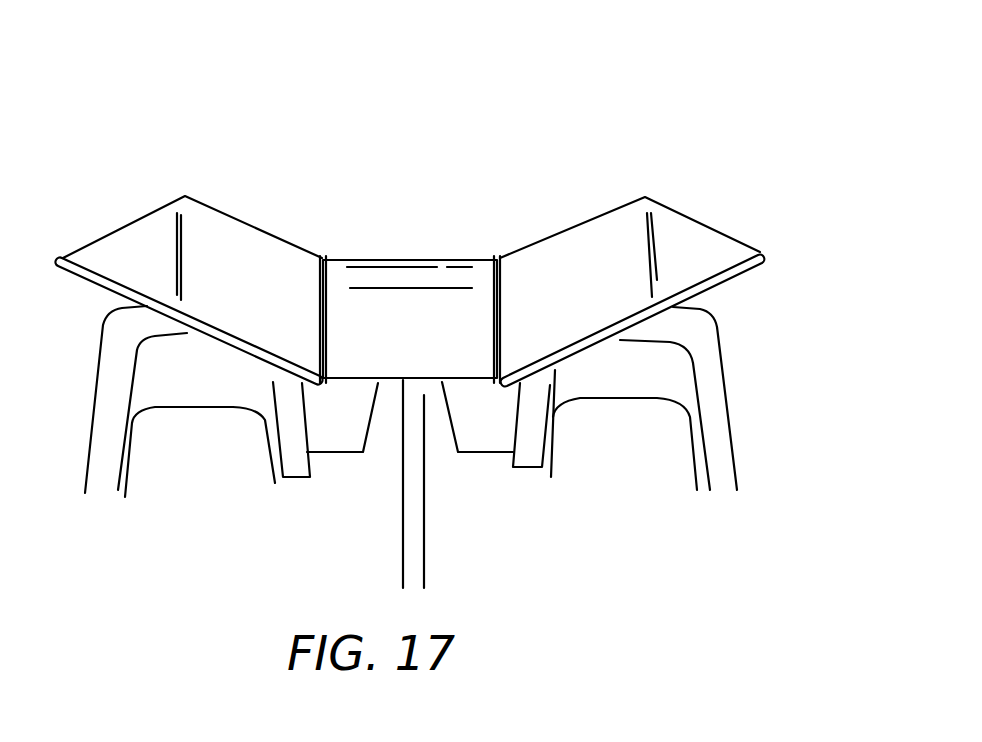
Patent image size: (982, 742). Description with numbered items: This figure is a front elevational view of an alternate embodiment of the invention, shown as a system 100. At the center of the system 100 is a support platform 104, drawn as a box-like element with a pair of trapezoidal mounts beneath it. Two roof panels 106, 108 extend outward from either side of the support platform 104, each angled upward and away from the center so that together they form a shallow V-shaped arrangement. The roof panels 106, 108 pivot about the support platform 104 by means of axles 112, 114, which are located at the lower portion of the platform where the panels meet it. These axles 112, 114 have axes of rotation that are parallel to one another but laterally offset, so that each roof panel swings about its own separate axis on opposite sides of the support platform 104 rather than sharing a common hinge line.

The system 100 is at (632, 151).
The support platform 104 is at (410, 260).
The roof panel 106 is at (160, 222).
The roof panel 108 is at (600, 242).
The axle 112 is at (325, 383).
The axle 114 is at (497, 382).